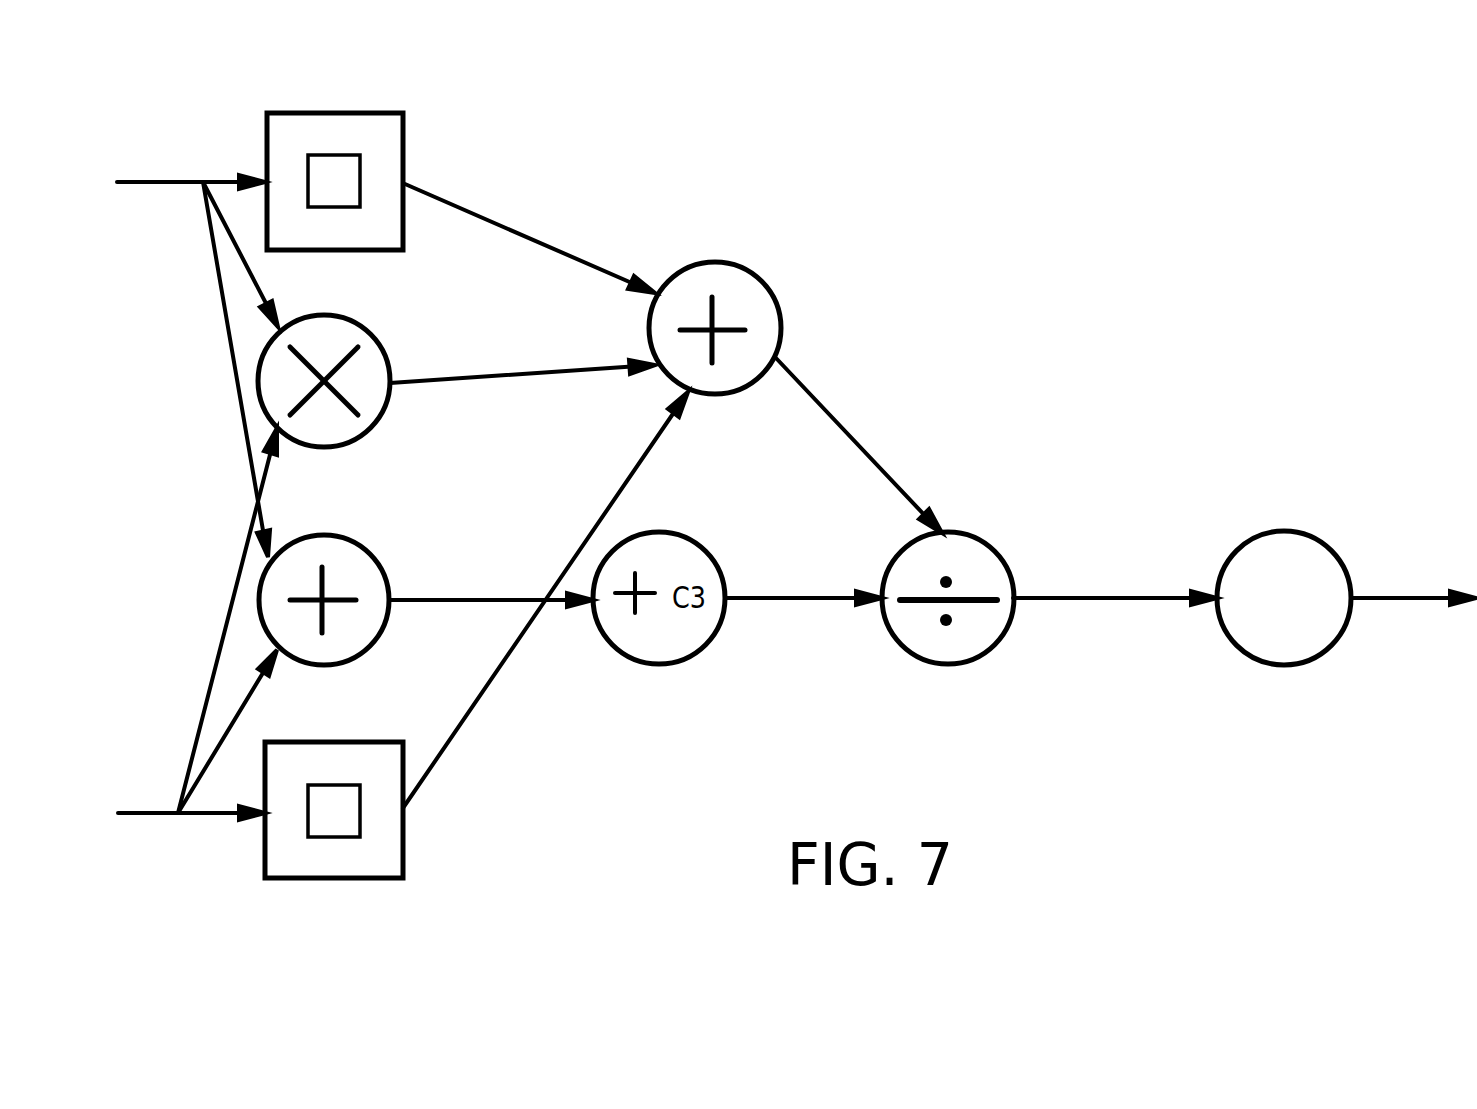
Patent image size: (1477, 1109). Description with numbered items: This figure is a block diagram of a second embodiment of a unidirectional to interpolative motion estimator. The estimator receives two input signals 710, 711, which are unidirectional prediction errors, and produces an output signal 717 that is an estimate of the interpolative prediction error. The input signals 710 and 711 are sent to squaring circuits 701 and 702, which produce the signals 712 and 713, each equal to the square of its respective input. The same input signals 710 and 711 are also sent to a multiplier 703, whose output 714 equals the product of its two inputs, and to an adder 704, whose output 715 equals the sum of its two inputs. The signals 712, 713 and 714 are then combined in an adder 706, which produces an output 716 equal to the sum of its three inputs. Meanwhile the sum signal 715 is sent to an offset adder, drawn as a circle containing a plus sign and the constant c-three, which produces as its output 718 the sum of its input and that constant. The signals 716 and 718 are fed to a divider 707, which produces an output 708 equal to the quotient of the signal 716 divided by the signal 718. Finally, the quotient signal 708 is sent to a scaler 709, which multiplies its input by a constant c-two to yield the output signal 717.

The squaring circuit 701 is at (317, 113).
The squaring circuit 702 is at (330, 878).
The multiplier 703 is at (373, 425).
The adder 704 is at (340, 537).
The adder 706 is at (755, 272).
The divider 707 is at (1002, 552).
The scaler 709 is at (1267, 533).
The input signal 710 is at (140, 182).
The input signal 711 is at (192, 813).
The signal 712 is at (498, 223).
The signal 713 is at (447, 752).
The output 714 is at (543, 373).
The output 715 is at (417, 602).
The output 716 is at (850, 433).
The output signal 717 is at (1387, 600).
The output 718 is at (752, 602).
The output 708 is at (1060, 602).